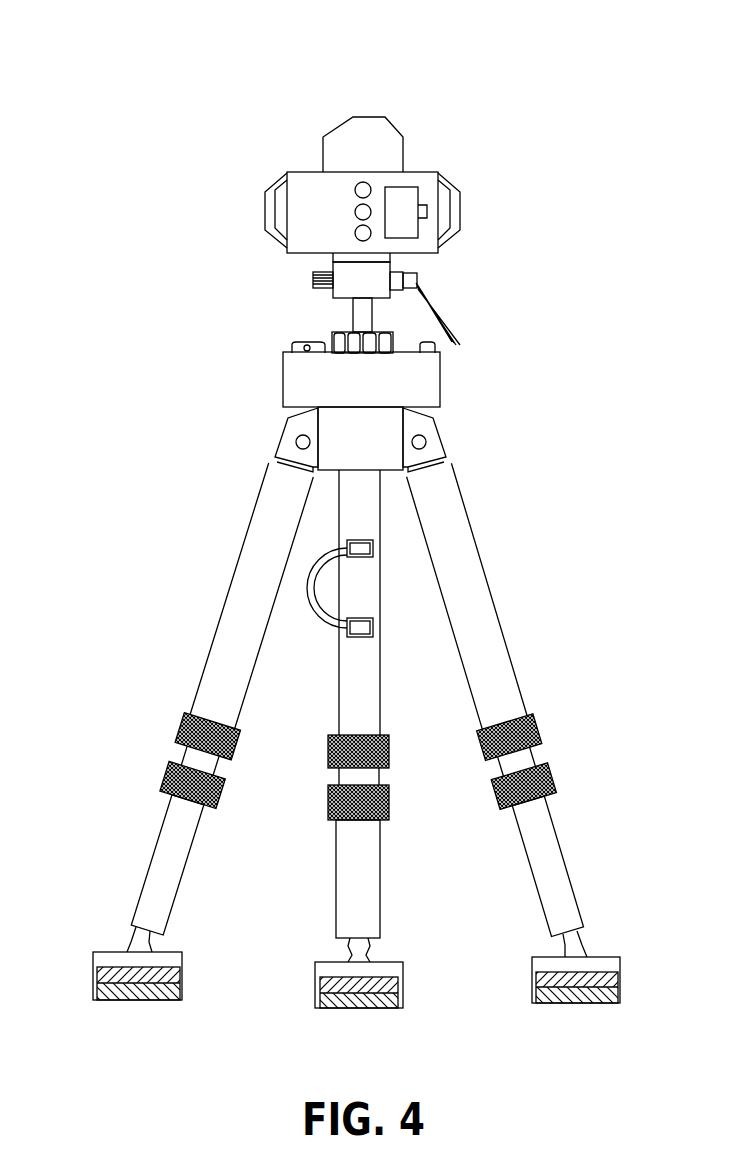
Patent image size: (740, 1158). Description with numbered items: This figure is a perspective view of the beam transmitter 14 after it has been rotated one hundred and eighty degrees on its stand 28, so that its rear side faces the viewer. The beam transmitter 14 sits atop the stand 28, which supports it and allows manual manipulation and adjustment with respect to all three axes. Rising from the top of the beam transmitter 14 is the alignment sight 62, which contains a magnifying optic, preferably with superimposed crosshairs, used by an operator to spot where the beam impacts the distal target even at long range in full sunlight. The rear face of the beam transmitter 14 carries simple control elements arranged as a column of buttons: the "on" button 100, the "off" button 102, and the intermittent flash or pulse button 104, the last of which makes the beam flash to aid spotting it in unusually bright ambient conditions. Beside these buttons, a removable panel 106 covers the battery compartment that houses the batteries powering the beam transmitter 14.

The beam transmitter 14 is at (232, 125).
The alignment sight 62 is at (355, 125).
The "on" button 100 is at (355, 187).
The "off" button 102 is at (355, 210).
The intermittent flash or pulse button 104 is at (355, 232).
The removable panel 106 is at (405, 197).
The stand 28 is at (175, 406).